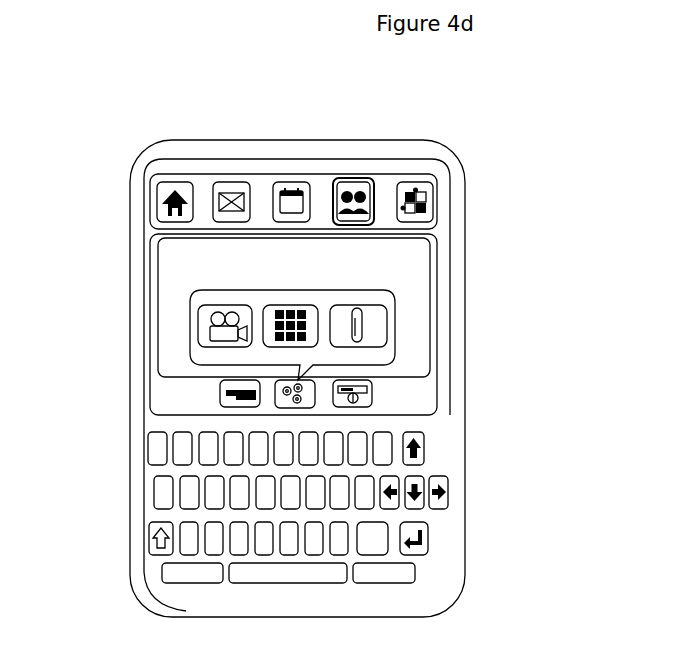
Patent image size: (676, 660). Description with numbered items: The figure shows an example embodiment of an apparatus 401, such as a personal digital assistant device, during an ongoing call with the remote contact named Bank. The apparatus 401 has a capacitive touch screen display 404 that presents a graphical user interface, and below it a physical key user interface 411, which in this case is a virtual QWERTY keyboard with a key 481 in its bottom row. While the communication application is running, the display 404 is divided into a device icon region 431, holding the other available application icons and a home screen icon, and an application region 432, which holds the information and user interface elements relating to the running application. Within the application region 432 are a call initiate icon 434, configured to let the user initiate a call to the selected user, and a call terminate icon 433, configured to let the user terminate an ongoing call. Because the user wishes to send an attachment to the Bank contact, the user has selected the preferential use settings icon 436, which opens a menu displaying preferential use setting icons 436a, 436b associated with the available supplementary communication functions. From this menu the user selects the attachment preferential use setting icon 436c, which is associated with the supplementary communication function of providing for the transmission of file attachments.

The apparatus 401 is at (518, 152).
The capacitive touch screen display 404 is at (450, 313).
The device icon region 431 is at (156, 223).
The application region 432 is at (320, 358).
The physical key user interface 411 is at (288, 477).
The call terminate icon 433 is at (372, 393).
The call initiate icon 434 is at (262, 410).
The preferential use settings icon 436 is at (405, 375).
The preferential use setting icon 436a is at (380, 313).
The preferential use setting icon 436b is at (317, 343).
The attachment preferential use setting icon 436c is at (250, 347).
The mode key 481 is at (402, 576).